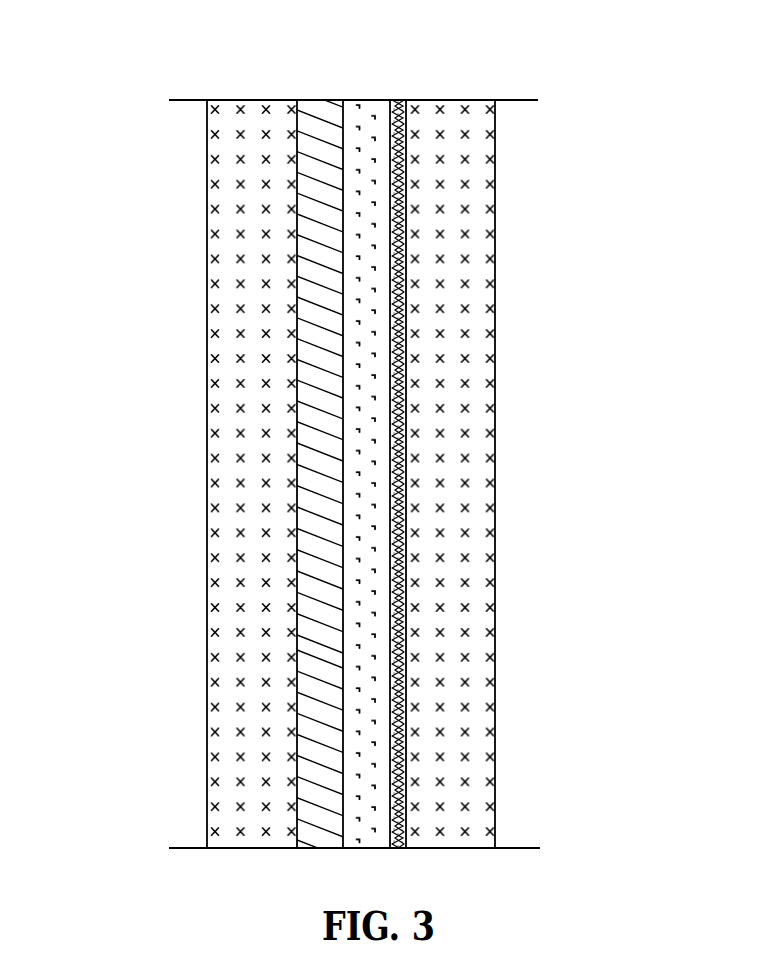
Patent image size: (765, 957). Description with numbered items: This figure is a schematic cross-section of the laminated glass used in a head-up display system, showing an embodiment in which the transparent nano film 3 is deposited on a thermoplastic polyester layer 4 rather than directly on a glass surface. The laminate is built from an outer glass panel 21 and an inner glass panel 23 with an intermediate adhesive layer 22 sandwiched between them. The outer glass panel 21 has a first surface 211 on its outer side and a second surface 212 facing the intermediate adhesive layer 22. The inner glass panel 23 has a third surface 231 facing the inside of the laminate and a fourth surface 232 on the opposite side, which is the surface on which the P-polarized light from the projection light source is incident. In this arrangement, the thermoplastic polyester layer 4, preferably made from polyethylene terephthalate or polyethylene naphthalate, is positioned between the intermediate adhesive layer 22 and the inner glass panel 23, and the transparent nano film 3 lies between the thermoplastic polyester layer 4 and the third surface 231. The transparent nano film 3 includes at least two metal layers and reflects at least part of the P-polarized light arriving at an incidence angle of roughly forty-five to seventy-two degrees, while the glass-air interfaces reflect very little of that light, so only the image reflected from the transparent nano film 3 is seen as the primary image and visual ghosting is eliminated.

The transparent nano film 3 is at (404, 445).
The thermoplastic polyester layer 4 is at (365, 221).
The outer glass panel 21 is at (255, 430).
The first surface 211 is at (207, 762).
The second surface 212 is at (298, 290).
The intermediate adhesive layer 22 is at (315, 487).
The inner glass panel 23 is at (440, 642).
The third surface 231 is at (405, 552).
The fourth surface 232 is at (495, 775).